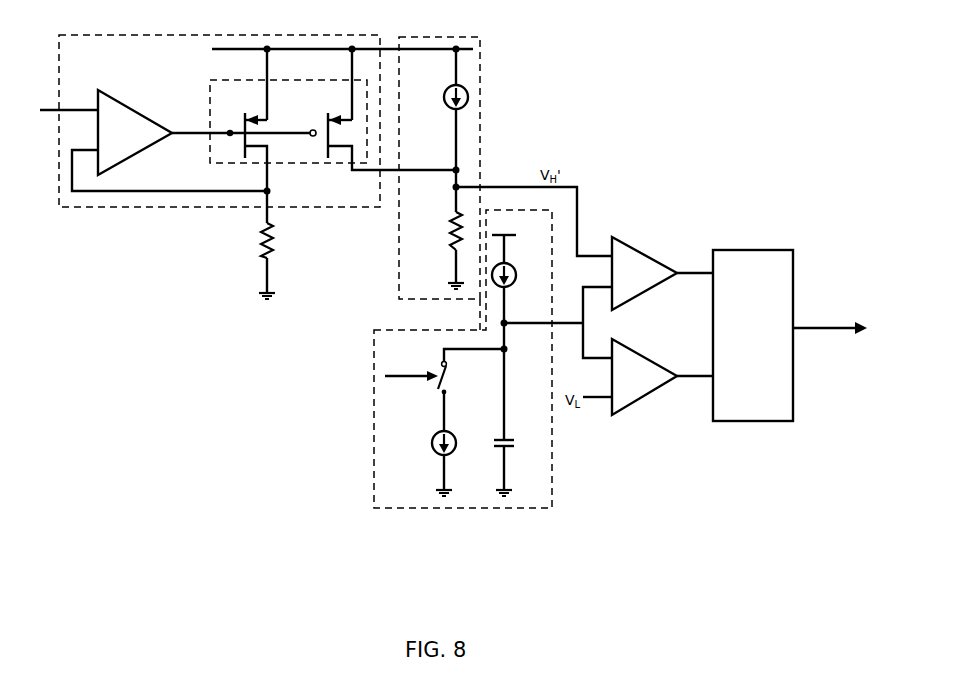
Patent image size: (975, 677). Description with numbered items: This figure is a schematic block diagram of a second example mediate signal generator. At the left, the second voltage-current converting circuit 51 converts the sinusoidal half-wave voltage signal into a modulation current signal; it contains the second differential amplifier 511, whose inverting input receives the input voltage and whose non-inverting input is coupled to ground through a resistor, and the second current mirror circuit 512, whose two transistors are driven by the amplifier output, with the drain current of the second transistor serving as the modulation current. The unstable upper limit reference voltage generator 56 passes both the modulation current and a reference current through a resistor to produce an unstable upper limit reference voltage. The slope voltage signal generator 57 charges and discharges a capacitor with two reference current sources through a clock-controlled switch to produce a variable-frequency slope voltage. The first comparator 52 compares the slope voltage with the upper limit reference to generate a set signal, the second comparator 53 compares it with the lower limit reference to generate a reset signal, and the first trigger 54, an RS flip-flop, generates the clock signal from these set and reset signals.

The second voltage-current converting circuit 51 is at (113, 34).
The second differential amplifier 511 is at (135, 132).
The second current mirror circuit 512 is at (210, 103).
The unstable upper limit reference voltage generator 56 is at (418, 37).
The slope voltage signal generator 57 is at (374, 447).
The first comparator 52 is at (662, 273).
The second comparator 53 is at (662, 377).
The first trigger 54 is at (790, 335).